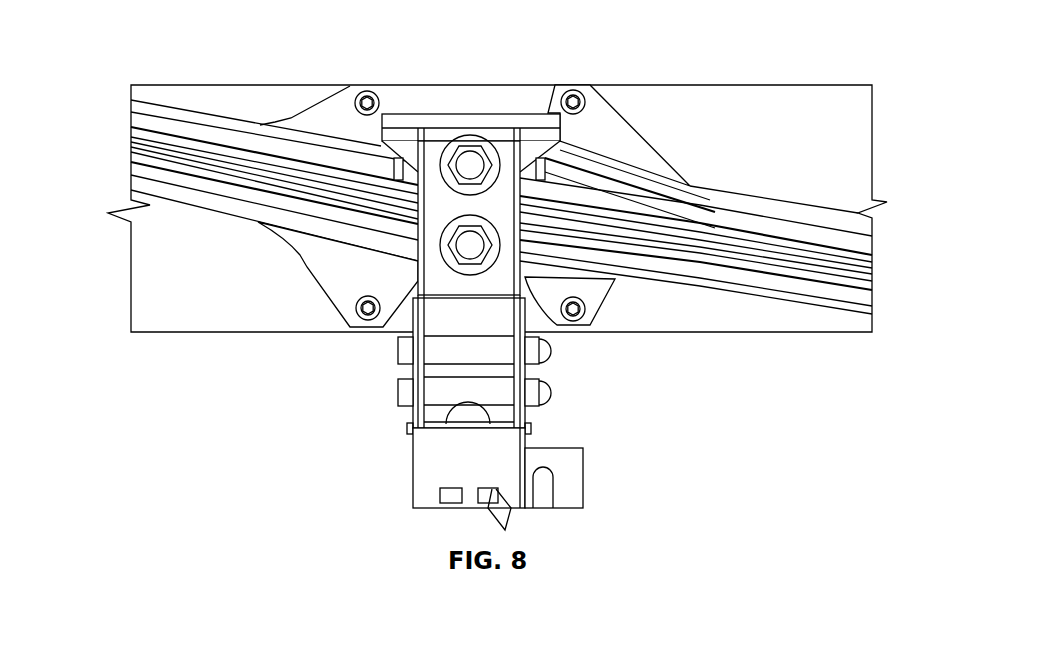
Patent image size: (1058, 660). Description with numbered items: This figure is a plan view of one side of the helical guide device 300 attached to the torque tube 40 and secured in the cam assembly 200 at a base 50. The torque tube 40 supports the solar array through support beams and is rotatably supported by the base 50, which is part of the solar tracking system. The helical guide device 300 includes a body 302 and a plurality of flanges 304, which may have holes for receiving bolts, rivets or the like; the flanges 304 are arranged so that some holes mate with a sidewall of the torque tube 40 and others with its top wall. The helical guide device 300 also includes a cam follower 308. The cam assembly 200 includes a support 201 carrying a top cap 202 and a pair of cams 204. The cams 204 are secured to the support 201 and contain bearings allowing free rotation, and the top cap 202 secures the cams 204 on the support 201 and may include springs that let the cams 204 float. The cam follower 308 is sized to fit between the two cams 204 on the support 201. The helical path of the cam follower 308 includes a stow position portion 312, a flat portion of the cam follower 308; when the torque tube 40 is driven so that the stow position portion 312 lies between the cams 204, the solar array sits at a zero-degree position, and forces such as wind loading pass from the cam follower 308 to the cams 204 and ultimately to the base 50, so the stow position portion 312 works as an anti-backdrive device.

The torque tube 40 is at (788, 107).
The base 50 is at (413, 455).
The cam assembly 200 is at (498, 280).
The support 201 is at (413, 320).
The top cap 202 is at (422, 112).
The cam 204 is at (492, 150).
The helical guide device 300 is at (533, 207).
The body 302 is at (747, 205).
The flange 304 is at (593, 108).
The cam follower 308 is at (822, 290).
The stow position portion 312 is at (420, 200).